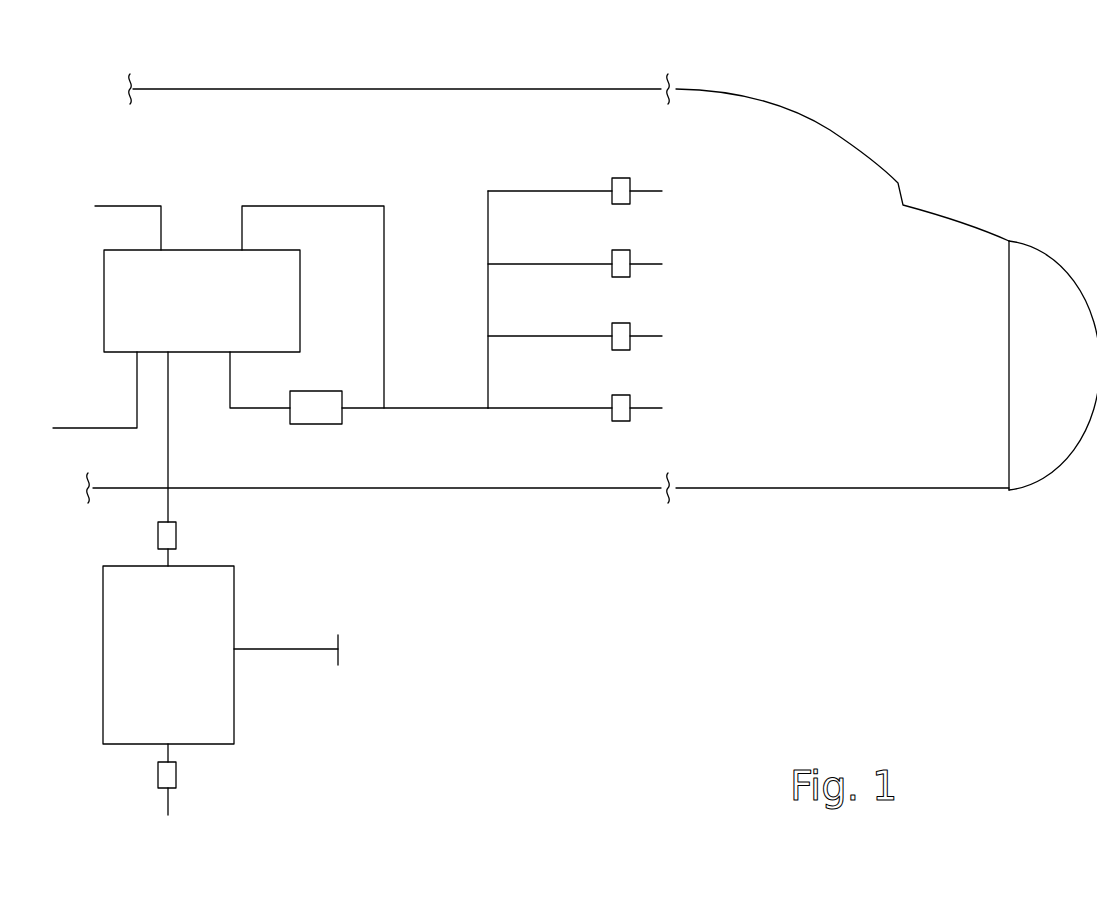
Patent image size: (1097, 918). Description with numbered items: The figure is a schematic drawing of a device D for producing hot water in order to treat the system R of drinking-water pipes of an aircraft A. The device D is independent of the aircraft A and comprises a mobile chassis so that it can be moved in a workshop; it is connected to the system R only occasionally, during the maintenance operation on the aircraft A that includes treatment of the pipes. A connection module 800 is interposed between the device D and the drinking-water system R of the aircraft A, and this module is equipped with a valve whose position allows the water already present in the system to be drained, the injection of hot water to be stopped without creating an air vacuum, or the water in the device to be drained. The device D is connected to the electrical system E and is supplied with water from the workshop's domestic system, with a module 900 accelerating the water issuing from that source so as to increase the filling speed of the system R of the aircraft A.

The aircraft A is at (792, 150).
The system of drinking-water pipes R is at (168, 453).
The connection module 800 is at (172, 531).
The device D is at (310, 703).
The electrical system E is at (306, 649).
The module for accelerating the water 900 is at (168, 784).